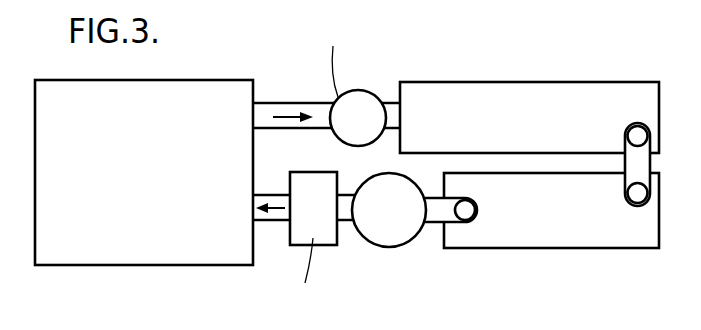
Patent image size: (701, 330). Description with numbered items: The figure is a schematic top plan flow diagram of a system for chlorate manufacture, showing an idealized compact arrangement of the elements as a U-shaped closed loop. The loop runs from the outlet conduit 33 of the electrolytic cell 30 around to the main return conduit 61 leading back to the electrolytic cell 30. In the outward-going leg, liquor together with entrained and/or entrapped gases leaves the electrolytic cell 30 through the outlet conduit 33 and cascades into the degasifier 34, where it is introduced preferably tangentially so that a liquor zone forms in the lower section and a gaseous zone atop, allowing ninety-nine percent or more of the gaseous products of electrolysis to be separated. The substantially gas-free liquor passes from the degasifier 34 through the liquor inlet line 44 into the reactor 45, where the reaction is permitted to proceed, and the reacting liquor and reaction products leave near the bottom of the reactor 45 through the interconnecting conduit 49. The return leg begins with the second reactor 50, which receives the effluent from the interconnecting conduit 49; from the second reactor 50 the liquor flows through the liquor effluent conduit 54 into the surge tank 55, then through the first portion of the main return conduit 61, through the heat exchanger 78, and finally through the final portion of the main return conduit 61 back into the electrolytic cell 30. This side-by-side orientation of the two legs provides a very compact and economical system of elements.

The electrolytic cell 30 is at (241, 88).
The outlet conduit 33 is at (296, 103).
The degasifier 34 is at (351, 92).
The liquor inlet line 44 is at (389, 104).
The reactor 45 is at (517, 84).
The interconnecting conduit 49 is at (638, 143).
The second reactor 50 is at (514, 248).
The liquor effluent conduit 54 is at (438, 217).
The surge tank 55 is at (393, 242).
The main return conduit 61 is at (277, 222).
The heat exchanger 78 is at (298, 172).